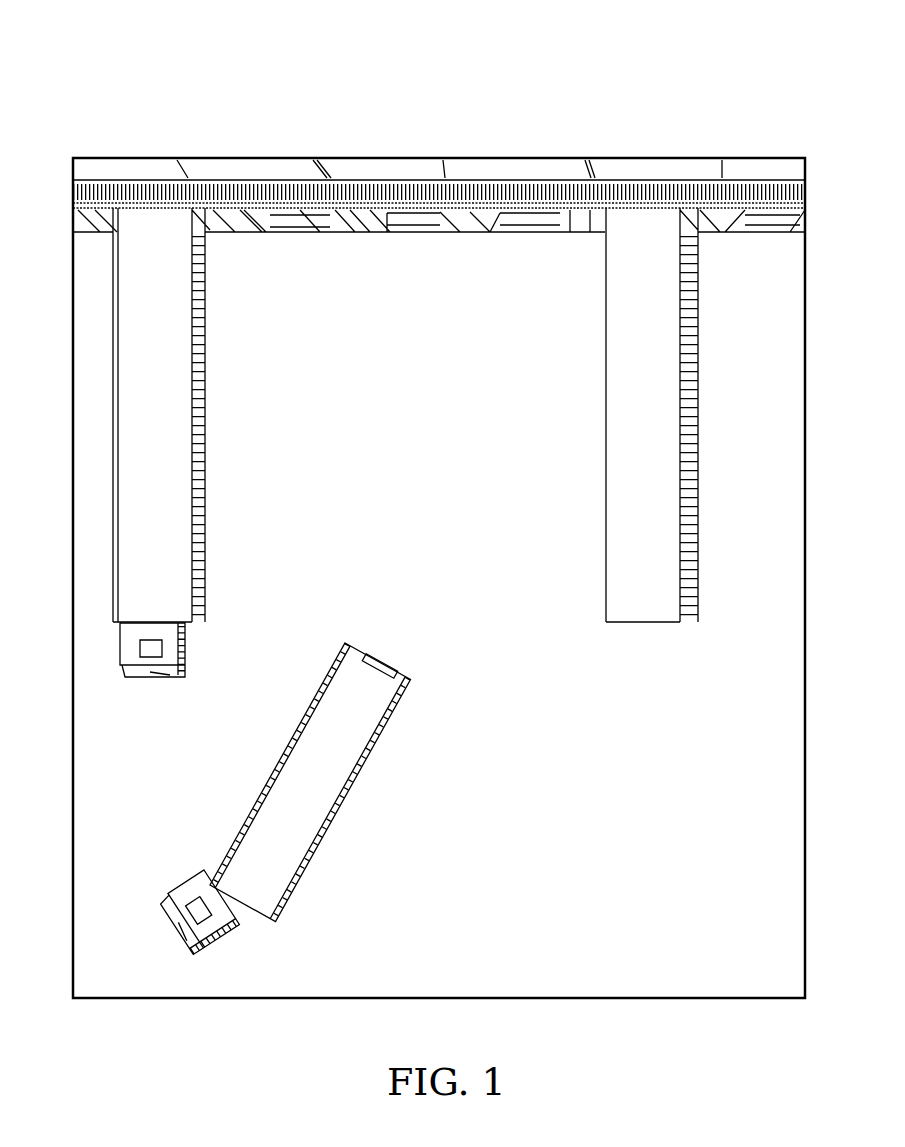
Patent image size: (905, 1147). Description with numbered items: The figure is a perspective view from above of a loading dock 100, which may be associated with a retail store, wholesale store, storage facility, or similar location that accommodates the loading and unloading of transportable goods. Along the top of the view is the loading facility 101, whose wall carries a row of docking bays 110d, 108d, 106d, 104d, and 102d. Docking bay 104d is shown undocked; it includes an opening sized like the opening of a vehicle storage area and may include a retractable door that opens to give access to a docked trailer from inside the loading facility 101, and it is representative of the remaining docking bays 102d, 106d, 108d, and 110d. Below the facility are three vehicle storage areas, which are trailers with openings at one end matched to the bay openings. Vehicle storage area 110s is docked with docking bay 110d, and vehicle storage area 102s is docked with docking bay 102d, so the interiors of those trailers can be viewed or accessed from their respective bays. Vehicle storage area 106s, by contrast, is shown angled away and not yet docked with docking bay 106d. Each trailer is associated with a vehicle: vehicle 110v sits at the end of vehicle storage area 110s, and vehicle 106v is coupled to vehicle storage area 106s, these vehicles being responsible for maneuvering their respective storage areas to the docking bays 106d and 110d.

The loading dock 100 is at (116, 44).
The loading facility 101 is at (752, 168).
The docking bay 110d is at (137, 168).
The docking bay 108d is at (246, 167).
The docking bay 106d is at (392, 168).
The docking bay 104d is at (523, 168).
The docking bay 102d is at (650, 168).
The vehicle storage area 110s is at (205, 510).
The vehicle storage area 102s is at (683, 422).
The vehicle storage area 106s is at (402, 677).
The vehicle 110v is at (198, 658).
The vehicle 106v is at (186, 885).